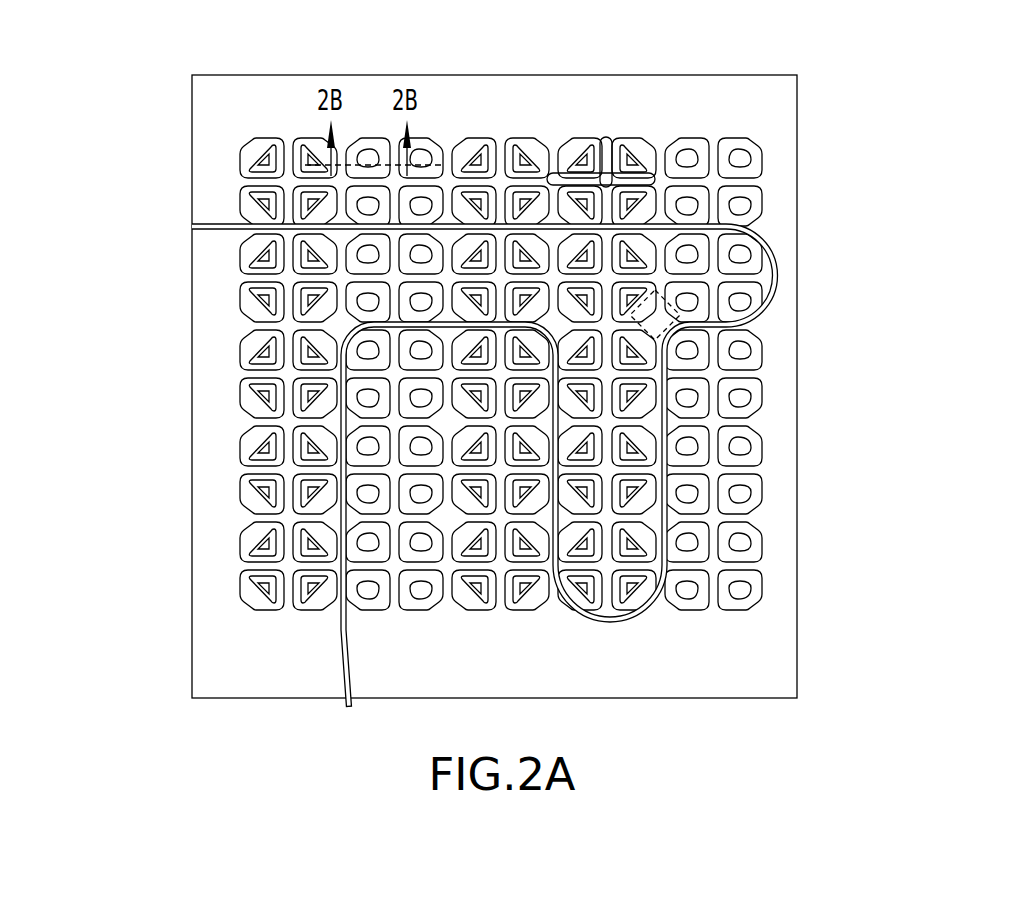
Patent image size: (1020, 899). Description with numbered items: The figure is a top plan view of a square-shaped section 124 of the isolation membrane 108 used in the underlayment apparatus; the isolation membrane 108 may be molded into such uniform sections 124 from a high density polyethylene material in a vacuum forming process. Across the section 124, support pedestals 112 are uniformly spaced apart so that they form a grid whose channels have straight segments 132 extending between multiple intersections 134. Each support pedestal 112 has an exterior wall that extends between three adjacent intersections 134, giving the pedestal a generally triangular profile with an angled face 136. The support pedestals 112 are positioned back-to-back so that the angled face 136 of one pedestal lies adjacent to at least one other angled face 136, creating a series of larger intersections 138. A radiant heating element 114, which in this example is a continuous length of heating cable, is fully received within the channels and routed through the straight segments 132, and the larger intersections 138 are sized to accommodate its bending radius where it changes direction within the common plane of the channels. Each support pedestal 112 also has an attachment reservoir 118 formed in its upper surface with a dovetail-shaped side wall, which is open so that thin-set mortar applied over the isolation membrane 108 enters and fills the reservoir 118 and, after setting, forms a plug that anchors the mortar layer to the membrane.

The isolation membrane 108 is at (165, 175).
The support pedestal 112 is at (765, 137).
The heating element 114 is at (345, 423).
The attachment reservoir 118 is at (746, 256).
The square-shaped section 124 is at (277, 126).
The straight segment 132 is at (648, 155).
The intersection 134 is at (570, 158).
The angled face 136 is at (555, 167).
The larger intersection 138 is at (683, 320).